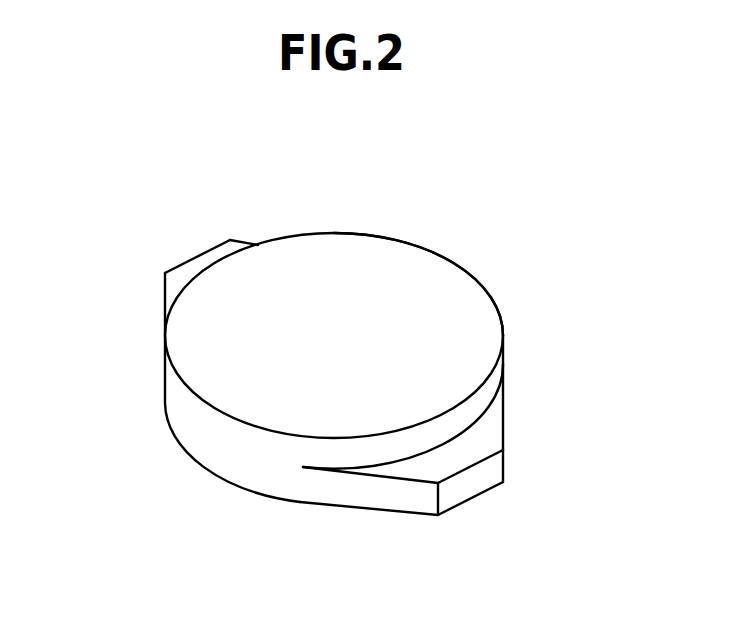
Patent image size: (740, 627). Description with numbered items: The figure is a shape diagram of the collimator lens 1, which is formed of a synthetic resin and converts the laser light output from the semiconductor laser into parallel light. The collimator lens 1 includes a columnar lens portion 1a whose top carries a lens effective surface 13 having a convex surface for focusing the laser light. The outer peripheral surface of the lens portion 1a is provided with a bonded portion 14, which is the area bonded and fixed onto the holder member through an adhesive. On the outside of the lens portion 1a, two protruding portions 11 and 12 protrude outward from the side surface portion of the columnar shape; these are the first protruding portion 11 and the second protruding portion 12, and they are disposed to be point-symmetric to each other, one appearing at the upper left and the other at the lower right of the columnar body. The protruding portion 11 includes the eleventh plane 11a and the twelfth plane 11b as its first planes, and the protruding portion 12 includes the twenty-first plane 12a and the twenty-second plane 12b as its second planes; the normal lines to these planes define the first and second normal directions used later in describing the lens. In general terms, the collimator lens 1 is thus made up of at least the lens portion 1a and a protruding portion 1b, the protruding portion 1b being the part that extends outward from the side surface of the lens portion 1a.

The collimator lens 1 is at (486, 238).
The lens portion 1a is at (298, 298).
The protruding portion 1b is at (215, 257).
The first protruding portion 11 is at (185, 271).
The eleventh plane 11a is at (245, 242).
The twelfth plane 11b is at (165, 293).
The second protruding portion 12 is at (477, 447).
The twenty-first plane 12a is at (505, 417).
The twenty-second plane 12b is at (372, 492).
The lens effective surface 13 is at (395, 260).
The bonded portion 14 is at (500, 312).